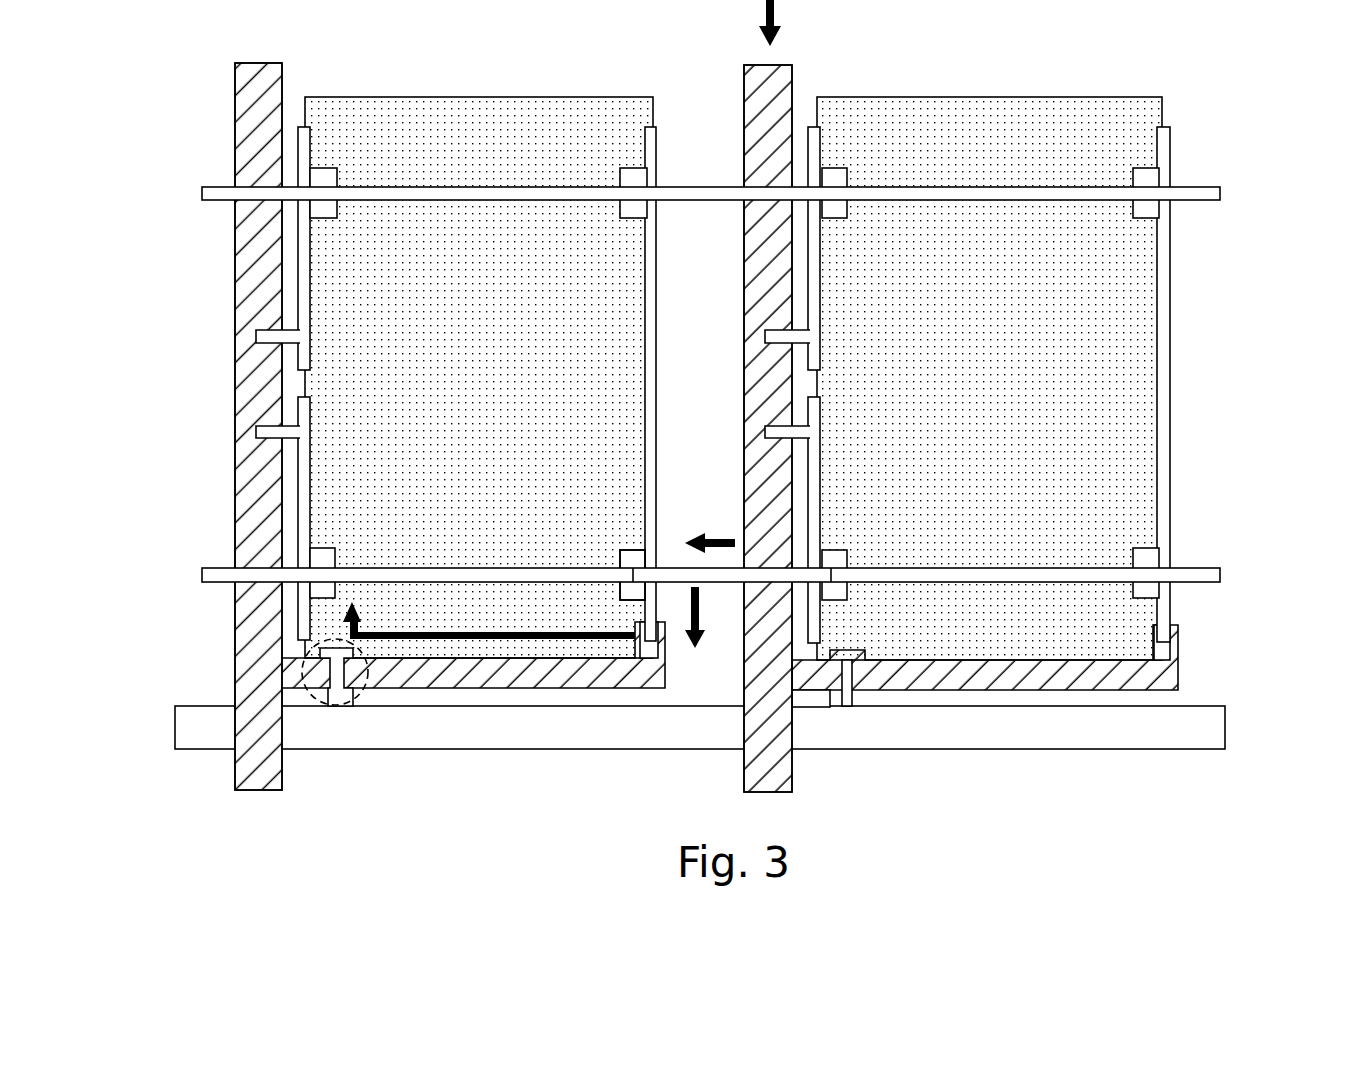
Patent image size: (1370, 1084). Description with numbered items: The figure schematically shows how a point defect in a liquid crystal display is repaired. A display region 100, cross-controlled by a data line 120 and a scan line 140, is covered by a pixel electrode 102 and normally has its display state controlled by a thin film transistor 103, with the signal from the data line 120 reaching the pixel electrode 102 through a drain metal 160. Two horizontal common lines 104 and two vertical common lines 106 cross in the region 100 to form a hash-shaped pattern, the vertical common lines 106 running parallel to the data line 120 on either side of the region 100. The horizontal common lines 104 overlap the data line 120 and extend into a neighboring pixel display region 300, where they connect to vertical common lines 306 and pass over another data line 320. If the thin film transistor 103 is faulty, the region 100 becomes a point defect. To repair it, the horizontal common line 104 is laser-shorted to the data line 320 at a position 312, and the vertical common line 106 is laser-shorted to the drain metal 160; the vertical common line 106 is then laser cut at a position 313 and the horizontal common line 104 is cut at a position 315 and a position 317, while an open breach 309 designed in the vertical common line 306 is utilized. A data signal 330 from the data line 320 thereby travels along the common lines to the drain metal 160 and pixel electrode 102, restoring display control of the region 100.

The display region 100 is at (467, 97).
The pixel electrode 102 is at (585, 112).
The thin film transistor 103 is at (365, 692).
The horizontal common line 104 is at (203, 192).
The vertical common line 106 is at (648, 283).
The data line 120 is at (233, 105).
The scan line 140 is at (1225, 726).
The drain metal 160 is at (582, 690).
The neighboring pixel display region 300 is at (1130, 97).
The vertical common line 306 is at (822, 284).
The open breach 309 is at (822, 385).
The position 312 is at (762, 573).
The position 313 is at (645, 560).
The position 315 is at (633, 588).
The position 317 is at (838, 602).
The data line 320 is at (793, 78).
The data signal 330 is at (780, 12).